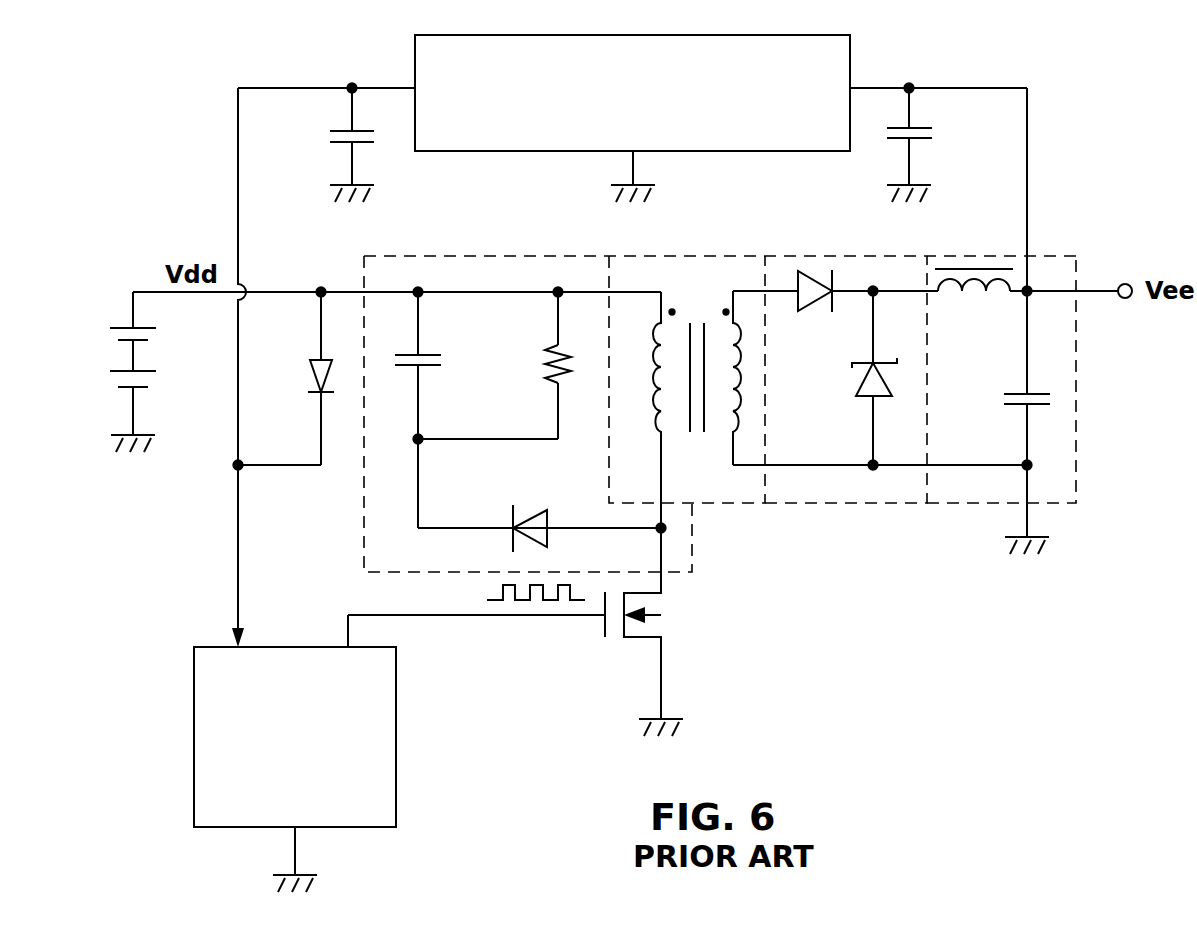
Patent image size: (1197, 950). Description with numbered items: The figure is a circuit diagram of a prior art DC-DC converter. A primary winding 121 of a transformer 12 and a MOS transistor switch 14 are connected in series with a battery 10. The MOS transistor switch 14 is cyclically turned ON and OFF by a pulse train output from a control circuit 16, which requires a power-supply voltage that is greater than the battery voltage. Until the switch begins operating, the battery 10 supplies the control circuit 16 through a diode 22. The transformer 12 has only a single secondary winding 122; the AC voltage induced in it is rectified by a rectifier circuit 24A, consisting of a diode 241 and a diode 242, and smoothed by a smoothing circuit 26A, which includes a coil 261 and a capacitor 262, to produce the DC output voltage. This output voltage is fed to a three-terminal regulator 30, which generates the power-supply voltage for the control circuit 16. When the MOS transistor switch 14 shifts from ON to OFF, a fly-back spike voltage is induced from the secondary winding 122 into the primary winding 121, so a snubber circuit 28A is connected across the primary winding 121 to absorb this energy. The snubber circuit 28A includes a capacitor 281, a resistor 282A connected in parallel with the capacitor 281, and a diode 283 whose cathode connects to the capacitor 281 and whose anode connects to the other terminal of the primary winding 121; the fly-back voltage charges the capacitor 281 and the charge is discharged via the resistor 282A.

The battery 10 is at (128, 328).
The transformer 12 is at (720, 388).
The MOS transistor switch 14 is at (650, 638).
The control circuit 16 is at (396, 714).
The diode 22 is at (316, 366).
The rectifier circuit 24A is at (880, 403).
The smoothing circuit 26A is at (1014, 405).
The snubber circuit 28A is at (490, 414).
The 3-terminal regulator 30 is at (850, 72).
The primary winding 121 is at (669, 328).
The secondary winding 122 is at (740, 415).
The diode 241 is at (822, 298).
The diode 242 is at (870, 397).
The coil 261 is at (984, 293).
The capacitor 262 is at (1020, 404).
The capacitor 281 is at (432, 355).
The resistor 282A is at (553, 385).
The diode 283 is at (532, 512).